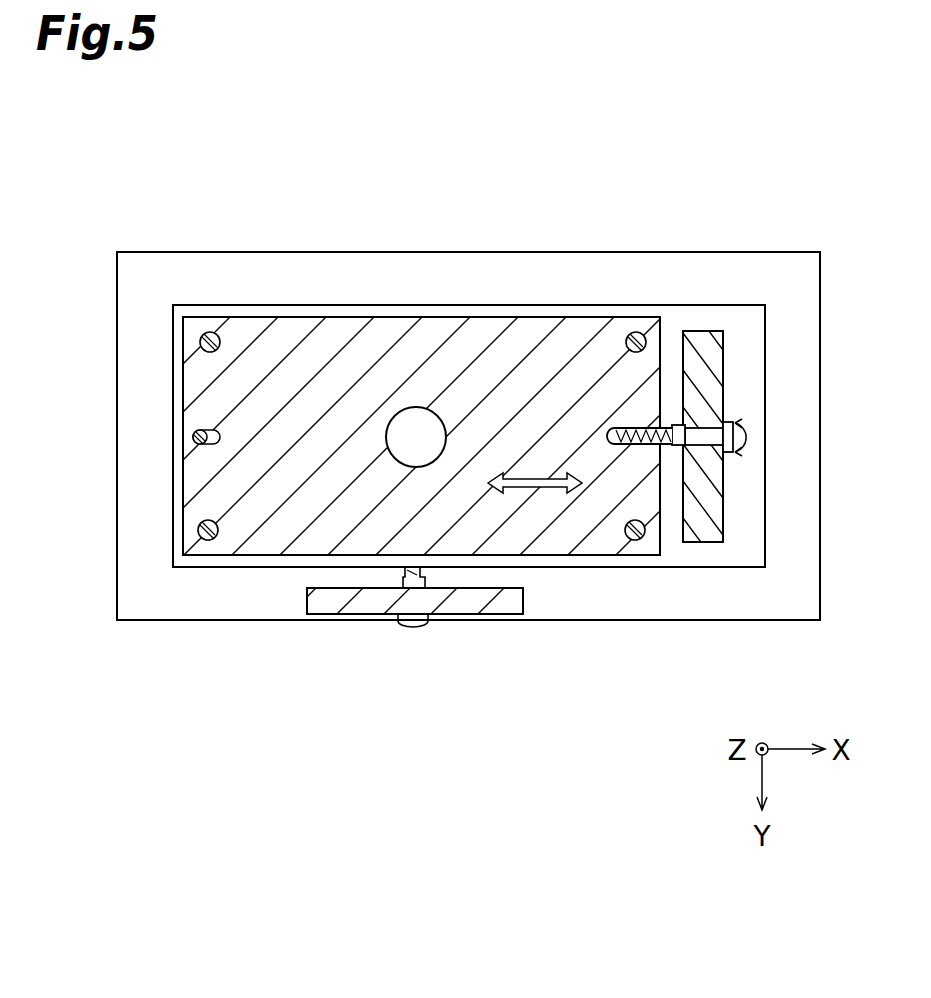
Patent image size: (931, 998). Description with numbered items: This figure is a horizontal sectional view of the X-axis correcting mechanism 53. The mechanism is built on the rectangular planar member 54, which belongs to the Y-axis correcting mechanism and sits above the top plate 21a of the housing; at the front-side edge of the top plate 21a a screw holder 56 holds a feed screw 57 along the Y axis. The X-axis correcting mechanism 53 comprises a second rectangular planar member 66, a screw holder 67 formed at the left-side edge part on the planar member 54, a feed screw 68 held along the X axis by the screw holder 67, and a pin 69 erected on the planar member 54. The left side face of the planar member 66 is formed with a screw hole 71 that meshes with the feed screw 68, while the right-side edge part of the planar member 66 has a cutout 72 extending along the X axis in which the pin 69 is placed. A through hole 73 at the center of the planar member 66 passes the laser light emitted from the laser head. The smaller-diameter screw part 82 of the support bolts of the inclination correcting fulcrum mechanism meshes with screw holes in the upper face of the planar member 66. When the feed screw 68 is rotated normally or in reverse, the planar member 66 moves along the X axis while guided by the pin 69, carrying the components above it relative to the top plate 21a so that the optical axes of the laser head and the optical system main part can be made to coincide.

The X-axis correcting mechanism 53 is at (752, 181).
The top plate 21a is at (135, 296).
The planar member 54 is at (268, 310).
The planar member 66 is at (346, 318).
The through hole 73 is at (421, 410).
The smaller-diameter screw part 82 is at (210, 330).
The pin 69 is at (192, 432).
The cutout 72 is at (190, 440).
The screw holder 67 is at (715, 363).
The feed screw 68 is at (700, 430).
The screw hole 71 is at (618, 448).
The screw holder 56 is at (327, 605).
The feed screw 57 is at (415, 627).